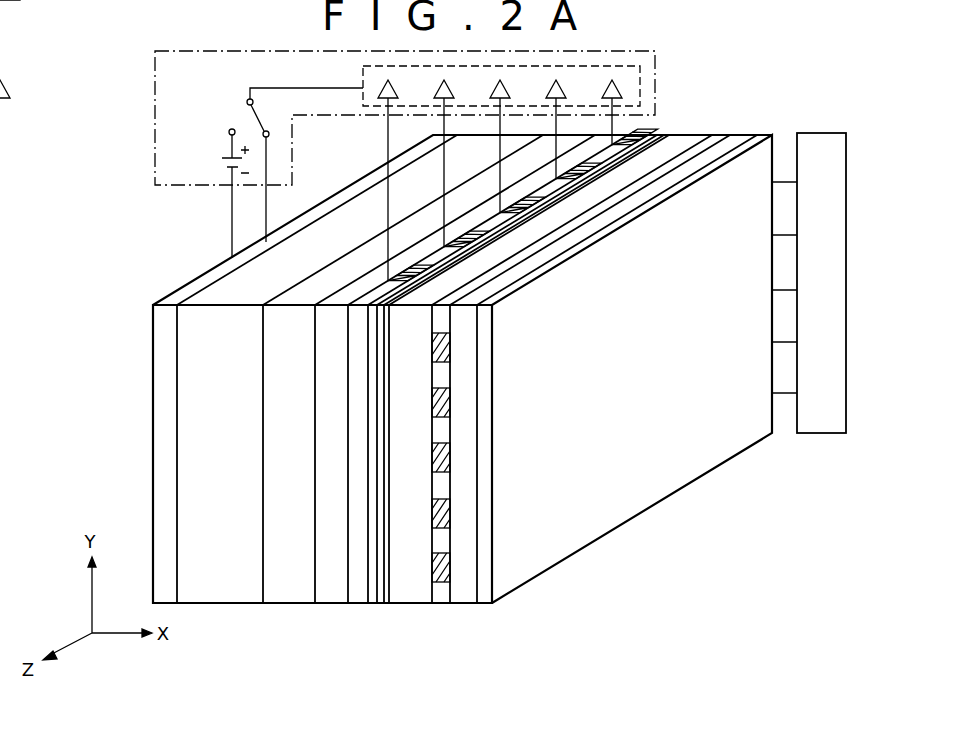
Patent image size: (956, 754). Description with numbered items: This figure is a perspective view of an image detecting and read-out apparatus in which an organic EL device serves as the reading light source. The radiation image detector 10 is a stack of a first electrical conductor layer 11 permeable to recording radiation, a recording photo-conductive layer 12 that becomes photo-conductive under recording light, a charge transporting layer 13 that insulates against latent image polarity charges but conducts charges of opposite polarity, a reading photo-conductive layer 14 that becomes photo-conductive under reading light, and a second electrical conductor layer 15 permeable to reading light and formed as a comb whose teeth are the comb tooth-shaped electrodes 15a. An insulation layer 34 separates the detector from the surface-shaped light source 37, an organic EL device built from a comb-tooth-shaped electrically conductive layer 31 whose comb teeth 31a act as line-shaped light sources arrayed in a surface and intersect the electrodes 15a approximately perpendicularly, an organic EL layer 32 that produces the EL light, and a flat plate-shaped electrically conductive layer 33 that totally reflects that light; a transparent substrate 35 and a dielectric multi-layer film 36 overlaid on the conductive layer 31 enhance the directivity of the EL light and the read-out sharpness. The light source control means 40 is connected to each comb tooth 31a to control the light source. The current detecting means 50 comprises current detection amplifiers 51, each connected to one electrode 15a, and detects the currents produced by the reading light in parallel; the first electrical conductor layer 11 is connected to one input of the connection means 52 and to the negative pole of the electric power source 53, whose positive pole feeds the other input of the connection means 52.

The radiation image detector 10 is at (462, 432).
The first electrical conductor layer 11 is at (170, 603).
The recording photo-conductive layer 12 is at (210, 603).
The charge transporting layer 13 is at (282, 603).
The reading photo-conductive layer 14 is at (325, 603).
The second electrical conductor layer 15 is at (484, 410).
The comb tooth-shaped electrodes 15a is at (636, 135).
The electrically conductive layer 31 is at (578, 410).
The comb teeth 31a is at (431, 578).
The EL layer 32 is at (465, 603).
The electrically conductive layer 33 is at (484, 495).
The insulation layer 34 is at (373, 603).
The transparent substrate 35 is at (410, 603).
The dielectric multi-layer film 36 is at (385, 603).
The surface-shaped light source 37 is at (561, 432).
The light source control means 40 is at (846, 133).
The current detecting means 50 is at (357, 161).
The current detection amplifiers 51 is at (524, 92).
The connection means 52 is at (246, 120).
The electric power source 53 is at (216, 165).